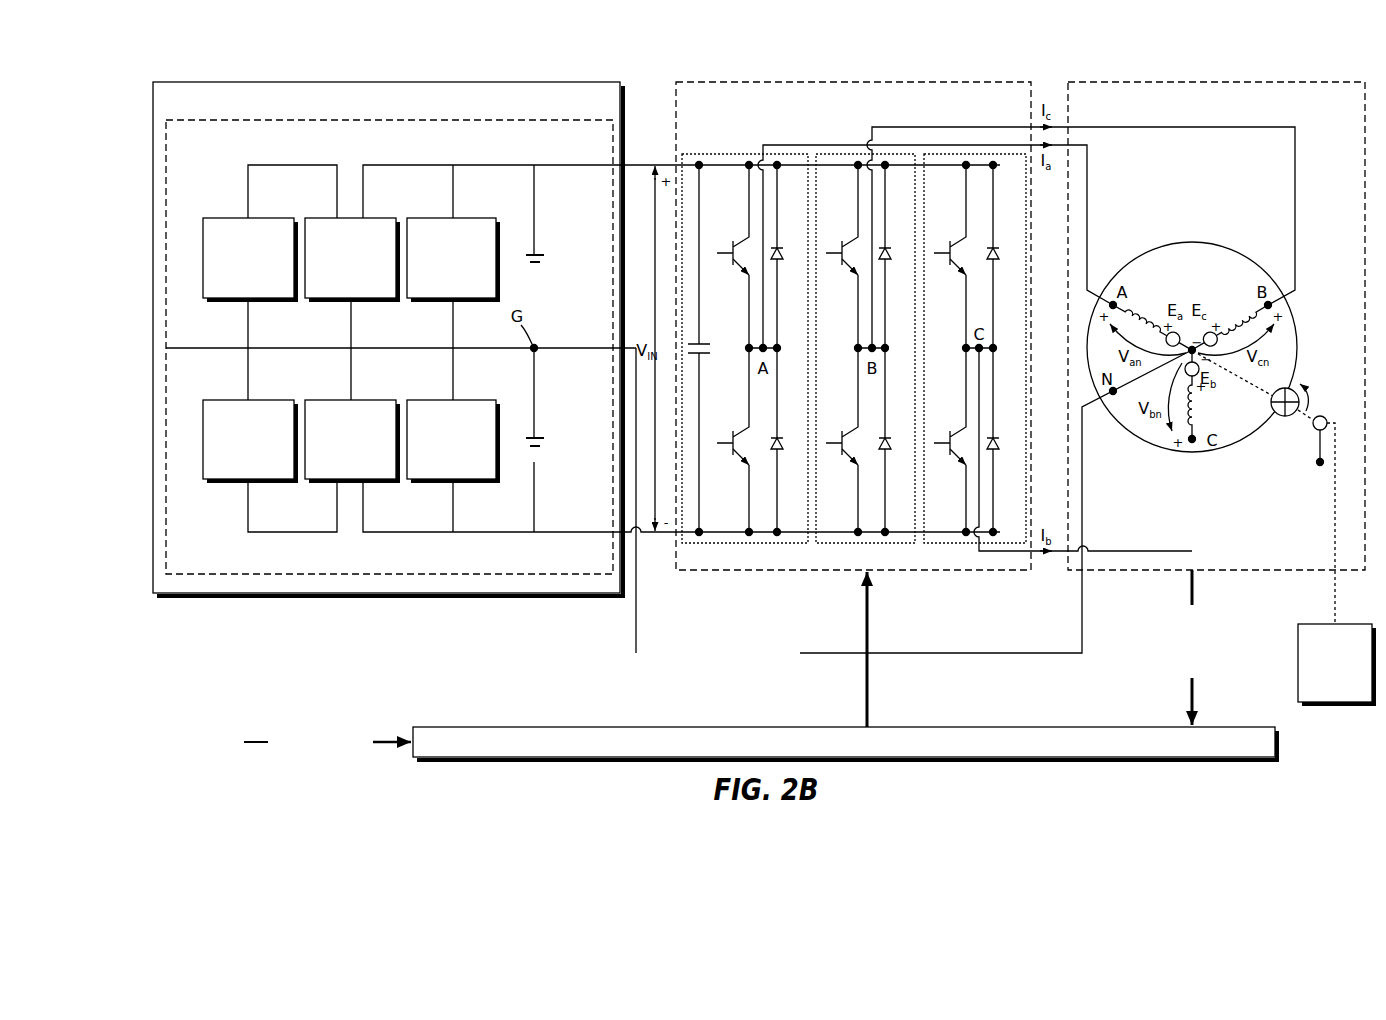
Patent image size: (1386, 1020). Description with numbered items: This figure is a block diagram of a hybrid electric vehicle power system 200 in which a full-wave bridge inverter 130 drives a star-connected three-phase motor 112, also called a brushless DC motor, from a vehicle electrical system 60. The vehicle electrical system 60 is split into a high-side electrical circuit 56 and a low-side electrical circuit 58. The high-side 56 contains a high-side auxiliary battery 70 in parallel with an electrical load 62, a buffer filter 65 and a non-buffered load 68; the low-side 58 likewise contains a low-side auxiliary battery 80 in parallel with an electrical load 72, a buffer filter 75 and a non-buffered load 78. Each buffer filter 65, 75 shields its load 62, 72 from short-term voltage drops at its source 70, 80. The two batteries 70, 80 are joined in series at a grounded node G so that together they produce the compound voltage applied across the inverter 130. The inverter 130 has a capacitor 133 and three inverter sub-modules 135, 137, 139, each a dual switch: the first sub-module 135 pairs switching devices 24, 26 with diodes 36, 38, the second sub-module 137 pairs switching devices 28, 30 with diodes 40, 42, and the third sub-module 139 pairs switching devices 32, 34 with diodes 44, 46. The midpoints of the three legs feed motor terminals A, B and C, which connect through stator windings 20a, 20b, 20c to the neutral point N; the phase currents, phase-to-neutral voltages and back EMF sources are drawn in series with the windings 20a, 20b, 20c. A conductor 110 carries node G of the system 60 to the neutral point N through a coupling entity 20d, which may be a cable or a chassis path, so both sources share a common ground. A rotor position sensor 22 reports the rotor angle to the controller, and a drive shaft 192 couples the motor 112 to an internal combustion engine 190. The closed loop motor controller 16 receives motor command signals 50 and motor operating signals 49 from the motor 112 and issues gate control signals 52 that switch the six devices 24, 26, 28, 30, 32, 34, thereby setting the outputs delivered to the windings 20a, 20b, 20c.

The vehicle electrical system 60 is at (192, 82).
The high-side electrical circuit 56 is at (204, 120).
The low-side electrical circuit 58 is at (210, 577).
The electrical load 62 is at (218, 218).
The buffer filter 65 is at (320, 218).
The non-buffered load 68 is at (421, 218).
The high-side auxiliary battery 70 is at (522, 232).
The electrical load 72 is at (218, 400).
The buffer filter 75 is at (320, 400).
The non-buffered load 78 is at (421, 400).
The low-side auxiliary battery 80 is at (545, 428).
The full-wave bridge inverter 130 is at (746, 82).
The capacitor 133 is at (703, 185).
The first inverter sub-module 135 is at (738, 548).
The second inverter sub-module 137 is at (838, 548).
The third inverter sub-module 139 is at (948, 548).
The solid state switching device 24 is at (740, 268).
The solid state switching device 26 is at (741, 457).
The solid state switching device 28 is at (849, 268).
The solid state switching device 30 is at (850, 457).
The solid state switching device 32 is at (957, 268).
The solid state switching device 34 is at (958, 457).
The diode 36 is at (781, 247).
The diode 38 is at (781, 437).
The diode 40 is at (889, 247).
The diode 42 is at (889, 437).
The diode 44 is at (997, 247).
The diode 46 is at (997, 437).
The hybrid electric vehicle power system 200 is at (1064, 46).
The three-phase AC motor 112 is at (1294, 82).
The stator winding A 20a is at (1140, 318).
The stator winding B 20b is at (1245, 316).
The stator winding C 20c is at (1198, 404).
The coupling entity 20d is at (1083, 490).
The closed loop motor controller 16 is at (1284, 418).
The rotor position sensor 22 is at (1320, 416).
The drive shaft 192 is at (1333, 530).
The internal combustion engine (ICE) 190 is at (1311, 624).
The neutral feedback line 110 is at (654, 673).
The control signals 52 is at (864, 698).
The motor operating signals 49 is at (1190, 698).
The motor command signals 50 is at (258, 746).